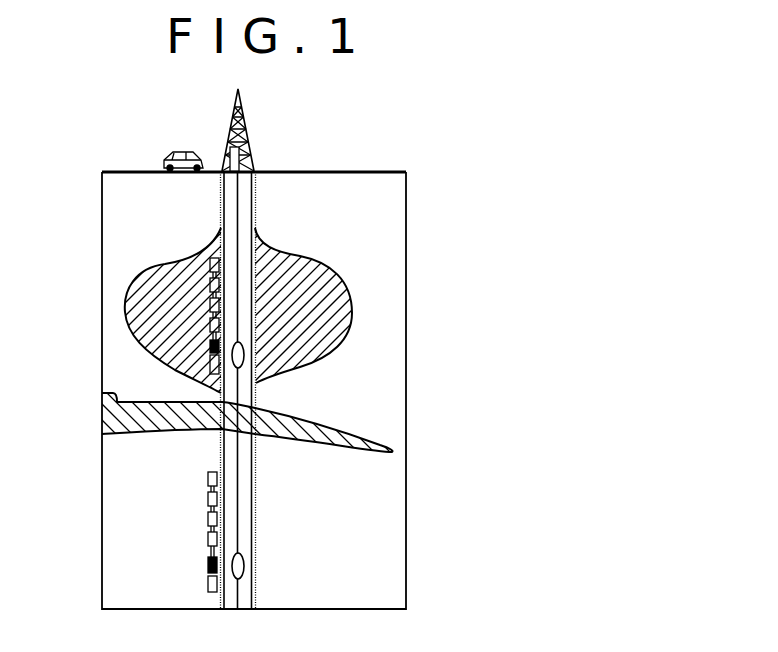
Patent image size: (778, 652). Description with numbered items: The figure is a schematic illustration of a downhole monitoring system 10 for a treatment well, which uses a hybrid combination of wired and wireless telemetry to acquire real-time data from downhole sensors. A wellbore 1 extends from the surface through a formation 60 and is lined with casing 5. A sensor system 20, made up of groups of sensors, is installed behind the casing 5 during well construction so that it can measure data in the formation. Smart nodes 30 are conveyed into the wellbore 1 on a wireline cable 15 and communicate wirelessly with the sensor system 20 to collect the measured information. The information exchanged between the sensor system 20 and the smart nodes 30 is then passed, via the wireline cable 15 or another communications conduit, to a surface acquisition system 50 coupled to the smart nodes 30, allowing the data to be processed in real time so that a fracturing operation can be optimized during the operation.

The wellbore 1 is at (243, 187).
The casing 5 is at (255, 198).
The monitoring system 10 is at (279, 133).
The wireline cable 15 is at (238, 217).
The sensor system 20 is at (208, 303).
The smart nodes 30 is at (238, 353).
The surface acquisition system 50 is at (168, 150).
The formation 60 is at (323, 307).